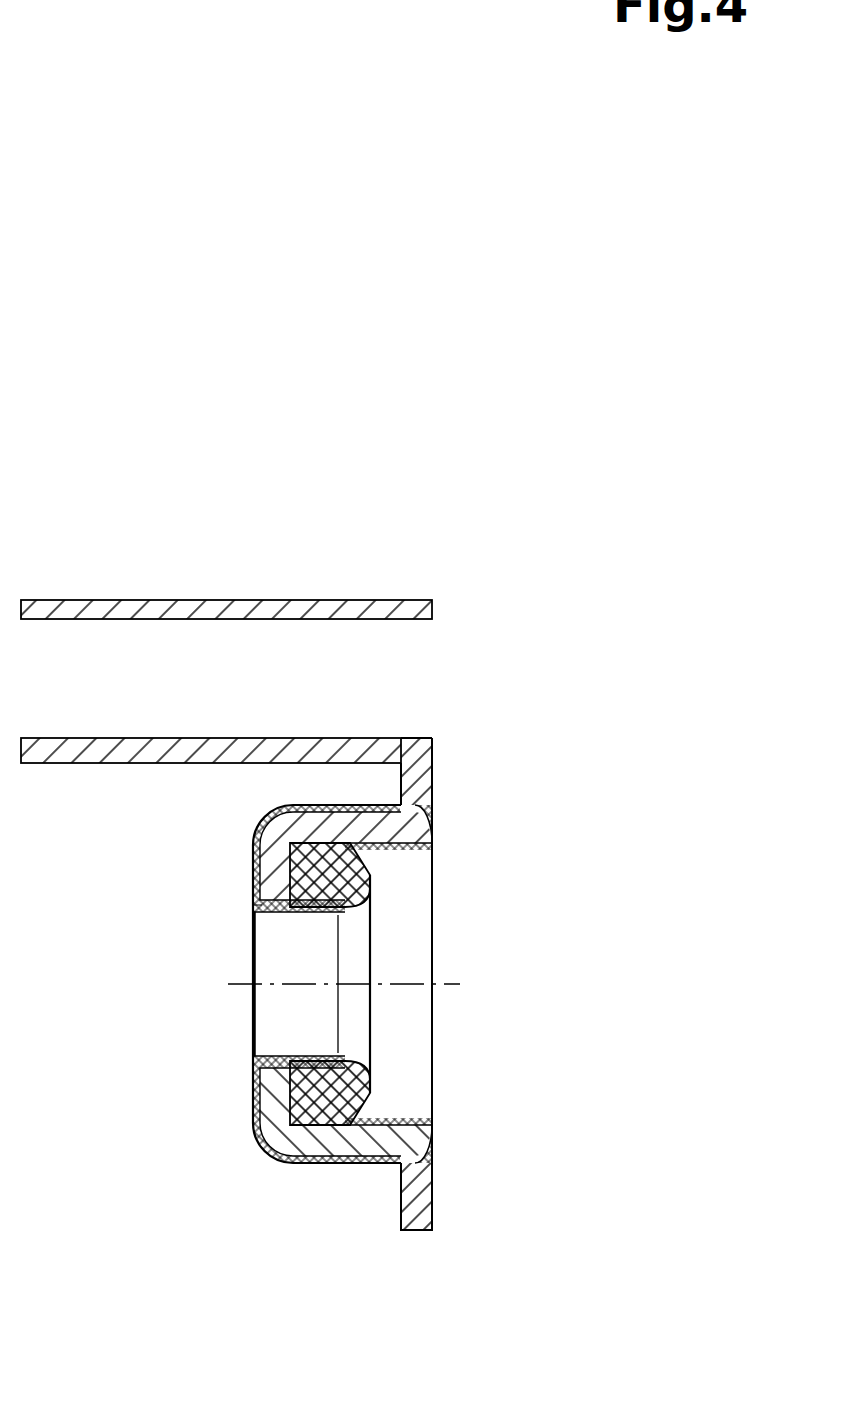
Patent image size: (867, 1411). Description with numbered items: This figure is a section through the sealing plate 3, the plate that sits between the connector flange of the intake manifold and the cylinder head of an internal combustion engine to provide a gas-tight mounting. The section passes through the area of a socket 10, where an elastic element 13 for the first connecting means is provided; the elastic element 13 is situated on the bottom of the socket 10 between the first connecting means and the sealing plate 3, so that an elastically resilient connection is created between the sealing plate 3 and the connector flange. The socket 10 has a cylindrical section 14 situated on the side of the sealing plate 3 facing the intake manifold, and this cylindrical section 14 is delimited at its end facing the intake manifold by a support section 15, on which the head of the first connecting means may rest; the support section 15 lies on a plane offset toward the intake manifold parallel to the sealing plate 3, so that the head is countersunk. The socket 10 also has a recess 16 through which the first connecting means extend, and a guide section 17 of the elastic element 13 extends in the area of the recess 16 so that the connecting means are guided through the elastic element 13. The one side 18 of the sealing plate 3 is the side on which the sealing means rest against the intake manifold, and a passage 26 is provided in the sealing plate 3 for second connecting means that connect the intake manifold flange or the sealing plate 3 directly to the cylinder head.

The sealing plate 3 is at (432, 1198).
The socket 10 is at (385, 1105).
The elastic element 13 is at (370, 890).
The cylindrical section 14 is at (303, 1167).
The support section 15 is at (272, 850).
The recess 16 is at (270, 1038).
The guide section 17 is at (253, 908).
The side 18 is at (402, 1210).
The passage 26 is at (408, 687).